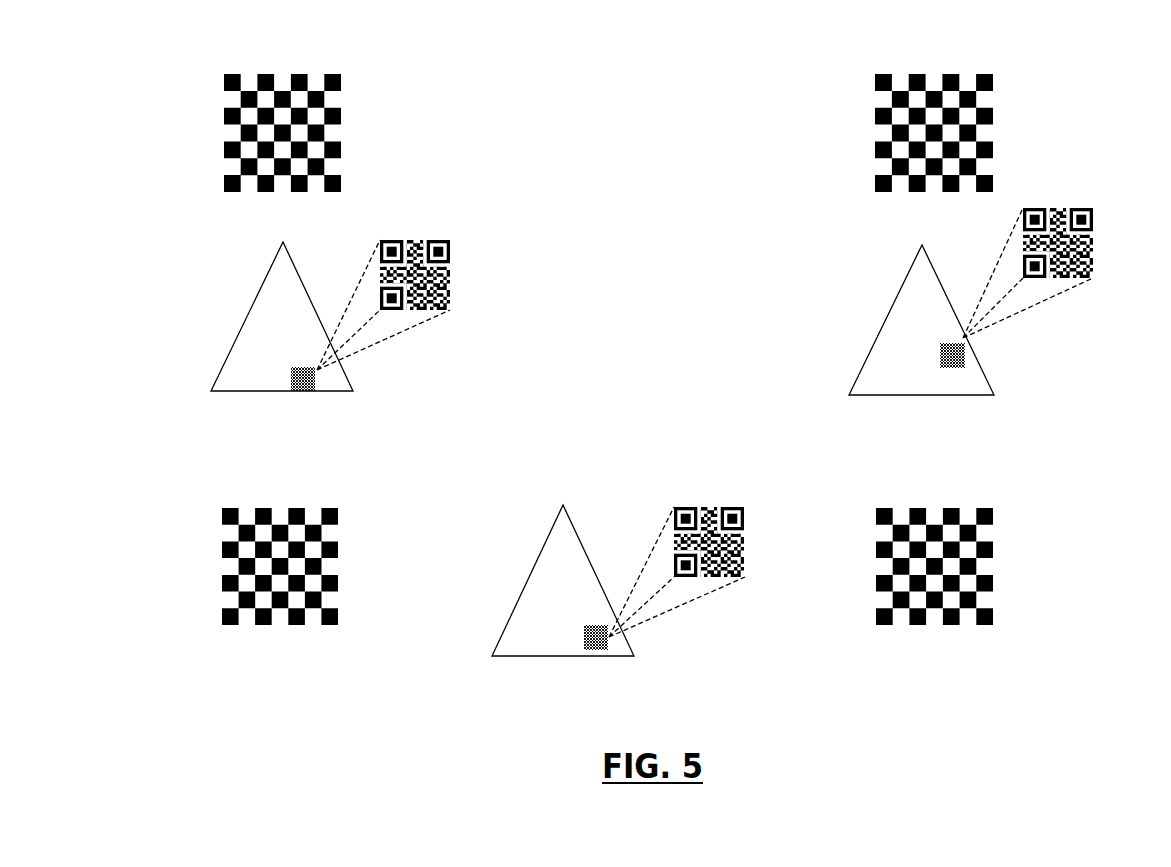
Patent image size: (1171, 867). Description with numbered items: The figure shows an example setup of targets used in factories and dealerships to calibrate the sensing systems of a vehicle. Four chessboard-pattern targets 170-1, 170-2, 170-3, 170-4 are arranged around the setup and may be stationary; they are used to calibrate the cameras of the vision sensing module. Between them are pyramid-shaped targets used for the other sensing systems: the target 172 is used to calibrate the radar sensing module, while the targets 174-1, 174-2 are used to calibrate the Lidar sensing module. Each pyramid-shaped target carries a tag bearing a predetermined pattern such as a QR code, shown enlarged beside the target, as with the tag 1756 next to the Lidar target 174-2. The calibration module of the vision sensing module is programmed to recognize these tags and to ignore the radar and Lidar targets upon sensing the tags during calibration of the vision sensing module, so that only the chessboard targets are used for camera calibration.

The target 170-1 is at (305, 73).
The target 170-2 is at (948, 73).
The target 170-3 is at (338, 507).
The target 170-4 is at (985, 507).
The target 174-1 is at (273, 302).
The target 174-2 is at (915, 302).
The target 172 is at (562, 543).
The QR code marker (enlarged) 1756 is at (1090, 232).